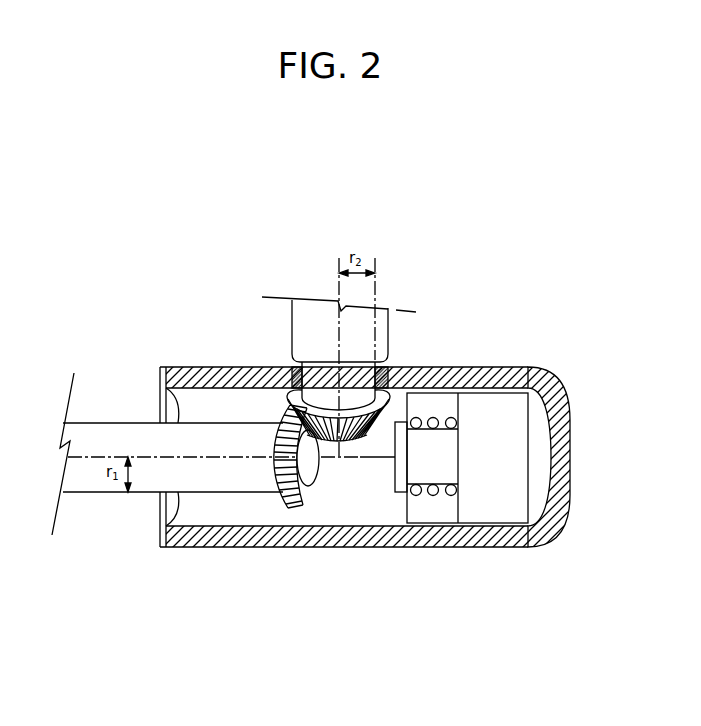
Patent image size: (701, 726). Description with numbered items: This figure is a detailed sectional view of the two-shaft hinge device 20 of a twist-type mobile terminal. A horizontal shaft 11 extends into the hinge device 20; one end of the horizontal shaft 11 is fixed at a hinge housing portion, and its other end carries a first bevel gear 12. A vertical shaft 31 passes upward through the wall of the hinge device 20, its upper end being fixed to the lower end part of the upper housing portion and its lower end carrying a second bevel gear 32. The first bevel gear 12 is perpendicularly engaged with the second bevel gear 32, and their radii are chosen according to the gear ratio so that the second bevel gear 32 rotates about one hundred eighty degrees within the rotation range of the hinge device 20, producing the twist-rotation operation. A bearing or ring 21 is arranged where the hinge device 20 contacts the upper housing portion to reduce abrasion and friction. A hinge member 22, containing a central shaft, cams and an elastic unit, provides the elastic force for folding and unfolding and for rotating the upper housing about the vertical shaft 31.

The horizontal shaft 11 is at (115, 423).
The first bevel gear 12 is at (275, 492).
The two-shaft hinge device 20 is at (487, 376).
The bearing or ring 21 is at (385, 372).
The hinge member 22 is at (425, 512).
The vertical shaft 31 is at (322, 380).
The second bevel gear 32 is at (366, 437).